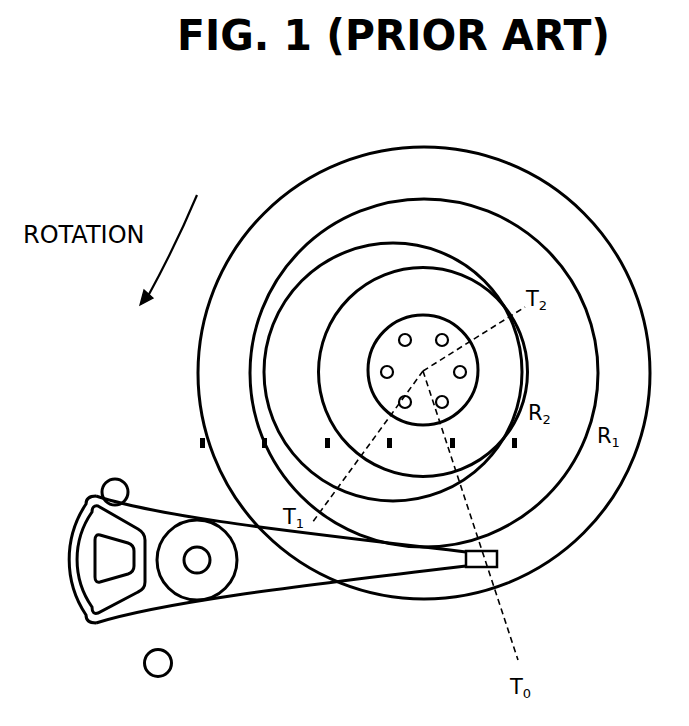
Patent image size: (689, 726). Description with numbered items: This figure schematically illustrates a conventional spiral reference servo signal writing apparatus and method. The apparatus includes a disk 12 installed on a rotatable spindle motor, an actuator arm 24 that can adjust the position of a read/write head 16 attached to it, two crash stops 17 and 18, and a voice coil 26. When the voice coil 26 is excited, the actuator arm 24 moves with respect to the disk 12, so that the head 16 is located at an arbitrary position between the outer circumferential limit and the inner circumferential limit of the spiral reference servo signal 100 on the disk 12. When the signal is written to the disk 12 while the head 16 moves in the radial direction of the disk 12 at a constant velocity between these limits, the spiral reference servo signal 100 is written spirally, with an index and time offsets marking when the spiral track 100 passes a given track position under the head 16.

The disk 12 is at (598, 518).
The spiral reference servo signal 100 is at (466, 259).
The read/write head 16 is at (473, 566).
The actuator arm 24 is at (317, 563).
The voice coil 26 is at (85, 563).
The crash stop 17 is at (127, 483).
The crash stop 18 is at (148, 672).